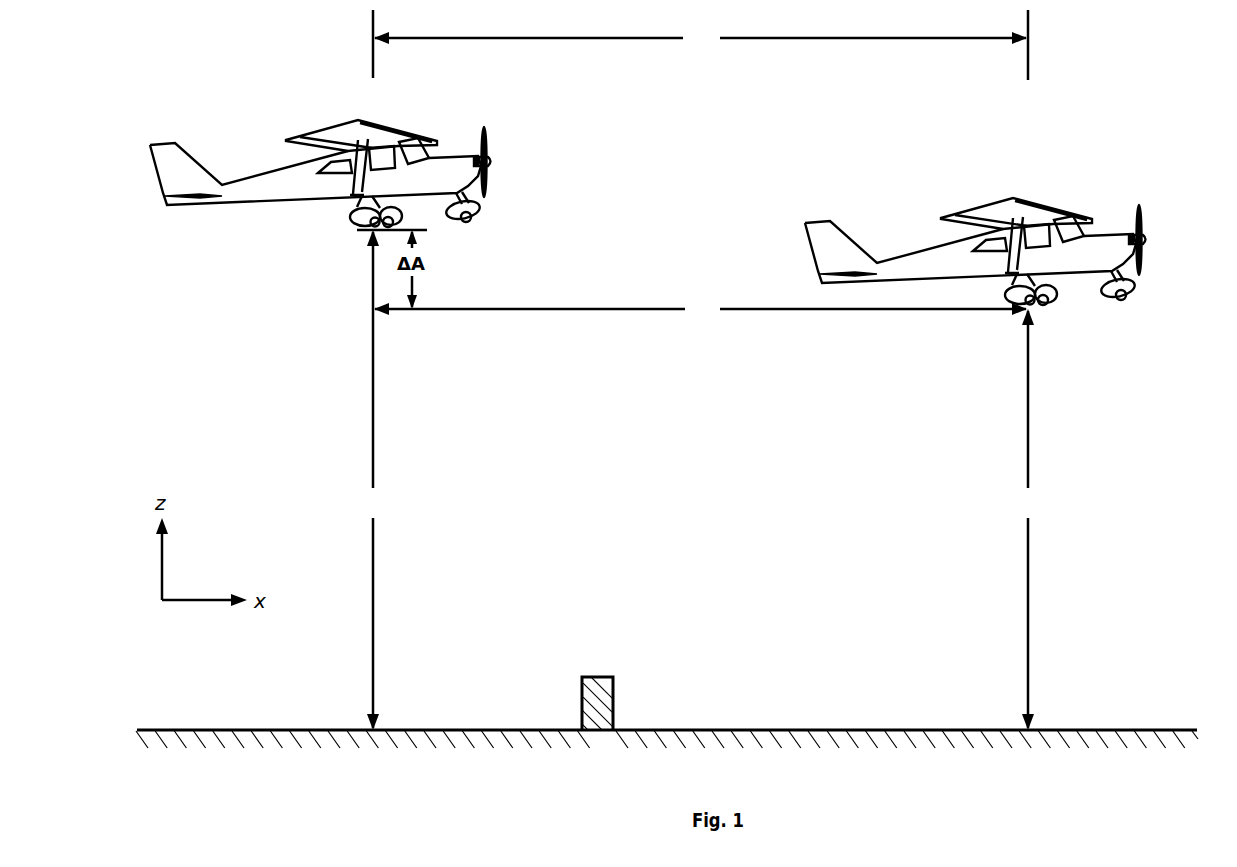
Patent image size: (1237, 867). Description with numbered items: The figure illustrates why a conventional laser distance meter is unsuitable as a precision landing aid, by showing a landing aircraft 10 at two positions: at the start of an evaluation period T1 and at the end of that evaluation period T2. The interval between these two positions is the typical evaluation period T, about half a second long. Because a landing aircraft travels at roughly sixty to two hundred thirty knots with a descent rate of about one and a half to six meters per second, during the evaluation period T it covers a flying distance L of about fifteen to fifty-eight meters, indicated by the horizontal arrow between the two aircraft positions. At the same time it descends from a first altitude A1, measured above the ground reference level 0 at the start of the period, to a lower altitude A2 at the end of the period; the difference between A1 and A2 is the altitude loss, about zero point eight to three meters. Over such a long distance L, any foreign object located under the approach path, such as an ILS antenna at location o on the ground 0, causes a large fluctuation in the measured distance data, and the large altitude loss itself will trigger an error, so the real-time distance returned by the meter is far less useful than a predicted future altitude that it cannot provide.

The aircraft 10 is at (648, 212).
The ground reference level 0 is at (858, 737).
The location of foreign object o is at (597, 658).
The evaluation period T is at (700, 38).
The start of evaluation period T1 is at (376, 63).
The end of evaluation period T2 is at (1031, 63).
The flying distance L is at (700, 309).
The altitude at start of evaluation period A1 is at (392, 480).
The altitude at end of evaluation period A2 is at (1031, 519).